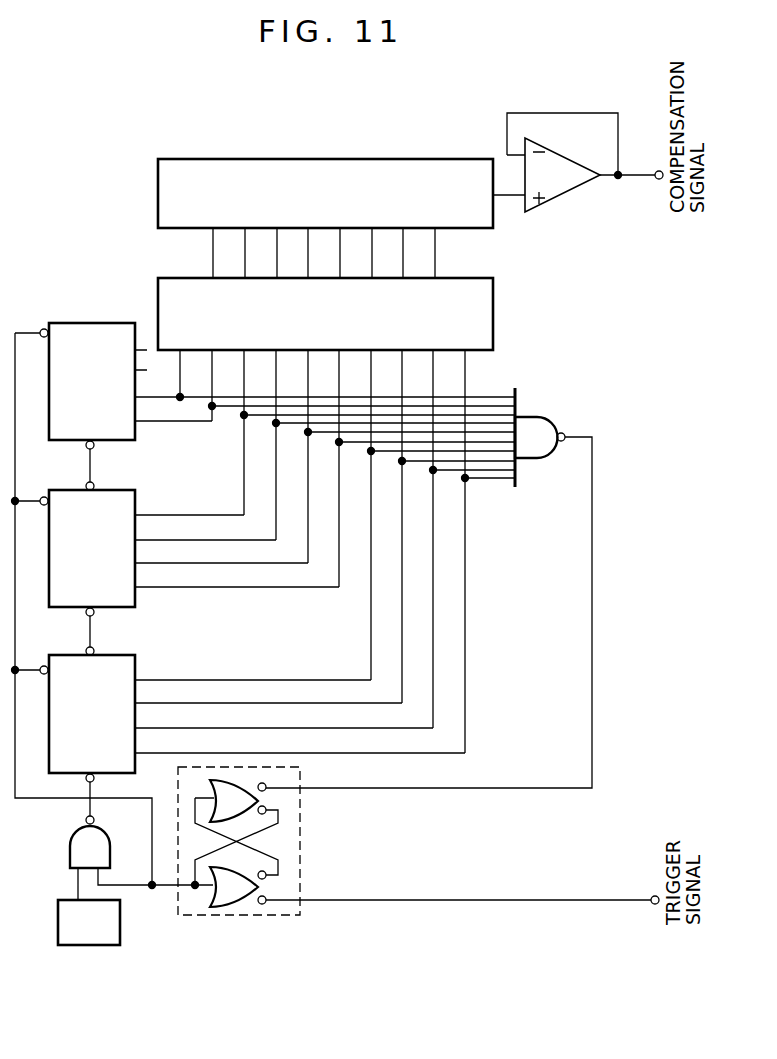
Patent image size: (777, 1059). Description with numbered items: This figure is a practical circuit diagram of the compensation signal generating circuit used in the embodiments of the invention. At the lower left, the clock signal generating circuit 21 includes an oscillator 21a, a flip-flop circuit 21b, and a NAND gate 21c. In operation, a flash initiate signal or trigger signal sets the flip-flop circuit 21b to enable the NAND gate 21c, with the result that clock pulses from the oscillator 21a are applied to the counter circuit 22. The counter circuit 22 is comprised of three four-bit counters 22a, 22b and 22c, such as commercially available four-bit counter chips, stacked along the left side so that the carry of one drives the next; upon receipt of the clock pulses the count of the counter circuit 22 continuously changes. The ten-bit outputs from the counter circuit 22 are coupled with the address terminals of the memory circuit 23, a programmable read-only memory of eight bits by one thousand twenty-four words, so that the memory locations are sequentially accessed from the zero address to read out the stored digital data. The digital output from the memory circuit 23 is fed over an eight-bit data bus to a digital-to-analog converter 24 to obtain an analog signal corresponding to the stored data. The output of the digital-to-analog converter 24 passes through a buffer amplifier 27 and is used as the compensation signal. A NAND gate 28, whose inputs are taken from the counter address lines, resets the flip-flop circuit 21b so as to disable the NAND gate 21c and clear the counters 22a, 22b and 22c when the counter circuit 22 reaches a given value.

The clock signal generating circuit 21 is at (156, 948).
The oscillator 21a is at (99, 946).
The flip-flop circuit 21b is at (268, 915).
The NAND gate 21c is at (70, 848).
The counter circuit 22 is at (42, 566).
The 4-bit counter 22a is at (135, 669).
The 4-bit counter 22b is at (135, 500).
The 4-bit counter 22c is at (96, 322).
The memory circuit 23 is at (493, 321).
The digital-to-analog converter 24 is at (440, 152).
The buffer amplifier 27 is at (568, 193).
The NAND gate 28 is at (546, 419).